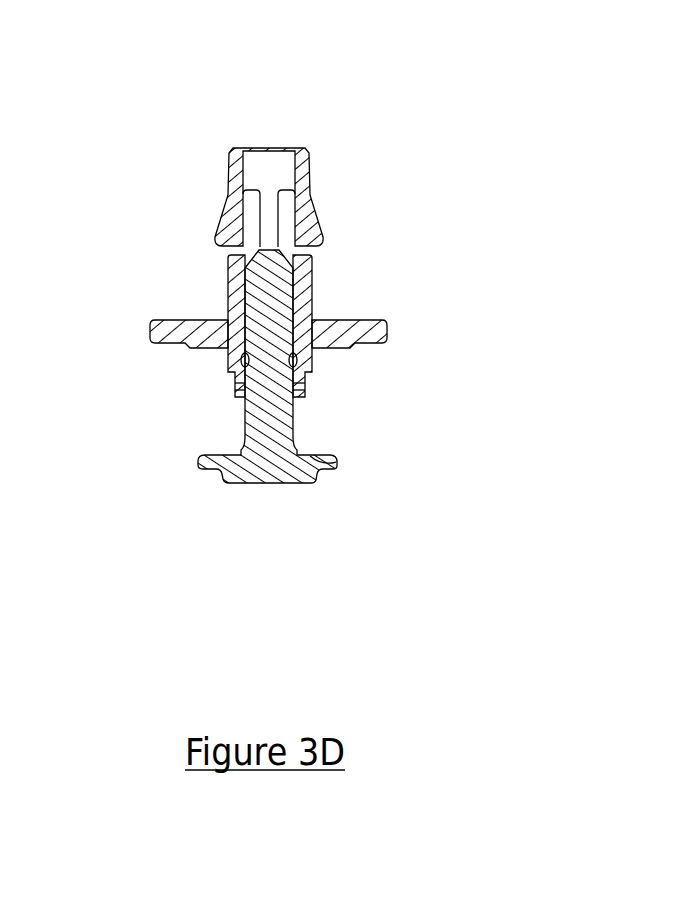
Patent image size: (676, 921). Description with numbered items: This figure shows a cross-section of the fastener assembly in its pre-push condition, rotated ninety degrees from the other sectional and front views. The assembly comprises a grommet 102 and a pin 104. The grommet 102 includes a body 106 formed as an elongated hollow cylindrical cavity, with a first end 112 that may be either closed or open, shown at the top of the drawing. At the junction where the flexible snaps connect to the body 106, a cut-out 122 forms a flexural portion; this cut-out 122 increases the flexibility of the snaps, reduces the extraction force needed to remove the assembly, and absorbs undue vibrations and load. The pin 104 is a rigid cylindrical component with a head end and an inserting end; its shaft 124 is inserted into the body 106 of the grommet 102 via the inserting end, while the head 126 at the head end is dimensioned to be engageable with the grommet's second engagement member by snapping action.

The grommet 102 is at (295, 202).
The pin 104 is at (286, 319).
The body 106 is at (350, 325).
The first end 112 is at (196, 177).
The cut-out 122 is at (247, 195).
The shaft 124 is at (368, 190).
The head 126 is at (312, 458).